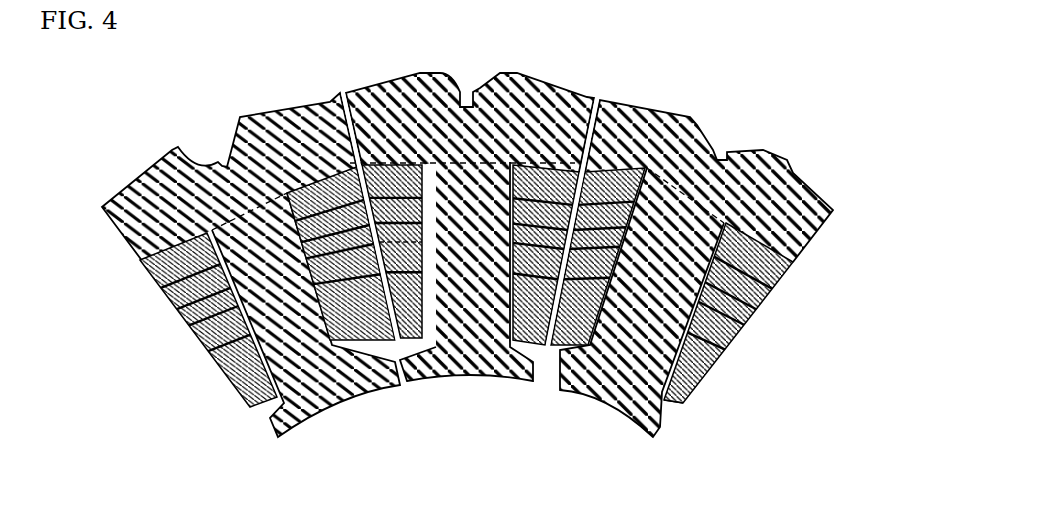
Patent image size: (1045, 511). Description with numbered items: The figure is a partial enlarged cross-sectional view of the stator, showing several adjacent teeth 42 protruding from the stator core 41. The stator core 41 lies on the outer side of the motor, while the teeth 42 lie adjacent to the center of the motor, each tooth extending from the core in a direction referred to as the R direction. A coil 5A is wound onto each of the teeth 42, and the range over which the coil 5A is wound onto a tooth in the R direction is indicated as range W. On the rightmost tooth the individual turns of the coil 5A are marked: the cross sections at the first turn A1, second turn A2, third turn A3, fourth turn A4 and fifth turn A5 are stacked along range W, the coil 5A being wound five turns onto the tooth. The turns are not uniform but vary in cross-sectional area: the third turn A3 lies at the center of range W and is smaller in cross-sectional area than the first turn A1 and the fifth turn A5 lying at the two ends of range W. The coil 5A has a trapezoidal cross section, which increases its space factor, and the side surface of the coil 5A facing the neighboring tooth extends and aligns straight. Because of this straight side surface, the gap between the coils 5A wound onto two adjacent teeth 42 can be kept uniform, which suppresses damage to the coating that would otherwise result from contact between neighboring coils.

The stator core 41 is at (786, 165).
The teeth 42 is at (602, 402).
The coil 5A is at (797, 338).
The first turn A1 is at (708, 394).
The second turn A2 is at (730, 354).
The third turn A3 is at (745, 325).
The fourth turn A4 is at (756, 302).
The fifth turn A5 is at (767, 276).
The range W is at (285, 405).